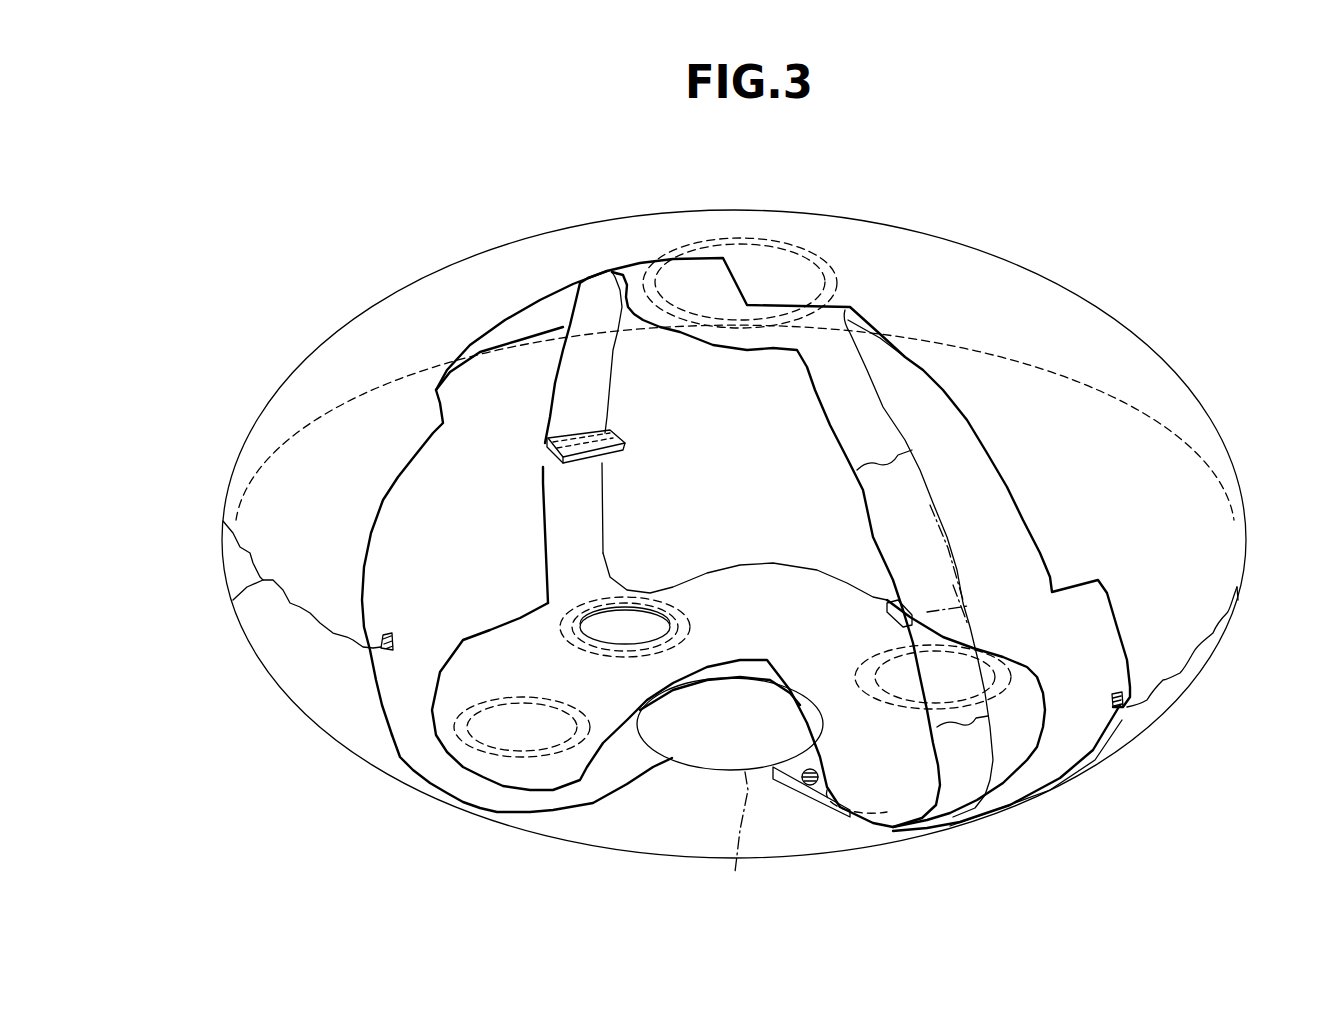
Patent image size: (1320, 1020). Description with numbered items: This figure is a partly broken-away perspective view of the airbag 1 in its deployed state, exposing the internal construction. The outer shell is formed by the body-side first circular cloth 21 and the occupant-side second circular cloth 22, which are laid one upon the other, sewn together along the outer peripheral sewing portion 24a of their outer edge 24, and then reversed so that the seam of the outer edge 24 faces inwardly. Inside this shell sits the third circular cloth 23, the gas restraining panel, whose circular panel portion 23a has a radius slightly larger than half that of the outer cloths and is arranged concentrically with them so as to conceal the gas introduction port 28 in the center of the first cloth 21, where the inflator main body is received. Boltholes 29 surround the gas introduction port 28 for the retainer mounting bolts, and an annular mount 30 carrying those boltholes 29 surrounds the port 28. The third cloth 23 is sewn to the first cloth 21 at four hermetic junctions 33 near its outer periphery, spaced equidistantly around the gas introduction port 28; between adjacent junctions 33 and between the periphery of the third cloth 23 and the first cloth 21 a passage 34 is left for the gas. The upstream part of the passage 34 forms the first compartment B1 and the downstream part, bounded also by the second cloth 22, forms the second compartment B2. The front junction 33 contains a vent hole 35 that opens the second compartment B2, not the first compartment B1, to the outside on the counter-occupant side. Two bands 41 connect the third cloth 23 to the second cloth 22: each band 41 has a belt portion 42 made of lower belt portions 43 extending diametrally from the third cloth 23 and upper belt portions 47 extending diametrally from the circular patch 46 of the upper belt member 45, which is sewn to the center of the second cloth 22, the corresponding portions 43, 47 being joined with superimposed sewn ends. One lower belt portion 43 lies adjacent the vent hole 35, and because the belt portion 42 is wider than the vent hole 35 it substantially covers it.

The airbag 1 is at (1112, 286).
The first circular cloth 21 is at (1153, 700).
The second circular cloth 22 is at (1213, 545).
The third circular cloth 23 is at (753, 580).
The panel portion 23a is at (798, 580).
The outer edge 24 is at (233, 600).
The outer peripheral sewing portion 24a is at (382, 637).
The gas introduction port 28 is at (730, 792).
The boltholes 29 is at (810, 783).
The annular mount 30 is at (782, 775).
The junctions 33 is at (515, 697).
The passage 34 is at (500, 627).
The vent hole 35 is at (623, 627).
The band 41 is at (557, 412).
The belt portion 42 is at (555, 438).
The lower belt portions 43 is at (555, 506).
The upper belt member 45 is at (632, 280).
The patch 46 is at (690, 273).
The upper belt portions 47 is at (580, 340).
The first compartment B1 is at (607, 767).
The second compartment B2 is at (398, 712).